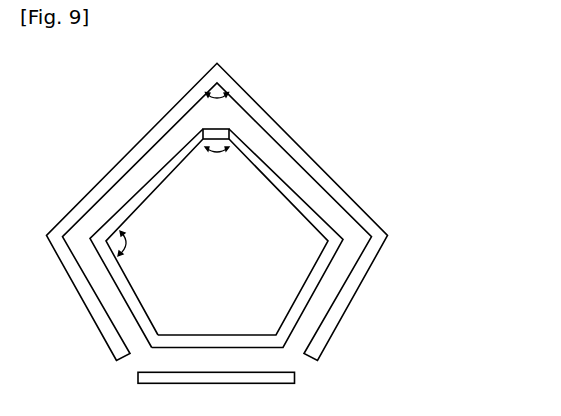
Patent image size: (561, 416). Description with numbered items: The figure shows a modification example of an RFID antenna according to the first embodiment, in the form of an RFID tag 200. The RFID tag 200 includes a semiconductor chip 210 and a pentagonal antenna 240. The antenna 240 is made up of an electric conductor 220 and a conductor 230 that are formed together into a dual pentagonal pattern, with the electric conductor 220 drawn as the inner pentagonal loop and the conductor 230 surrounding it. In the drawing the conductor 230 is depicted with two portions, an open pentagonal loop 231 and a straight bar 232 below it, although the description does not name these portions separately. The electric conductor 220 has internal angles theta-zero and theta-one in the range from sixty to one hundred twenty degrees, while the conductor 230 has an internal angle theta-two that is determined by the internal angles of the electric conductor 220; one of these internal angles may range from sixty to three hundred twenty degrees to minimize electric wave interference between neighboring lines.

The RFID tag 200 is at (84, 93).
The semiconductor chip 210 is at (227, 130).
The electric conductor 220 is at (317, 277).
The conductor 230 is at (417, 332).
The outer loop 231 is at (333, 325).
The bottom bar 232 is at (294, 378).
The pentagonal antenna 240 is at (467, 287).